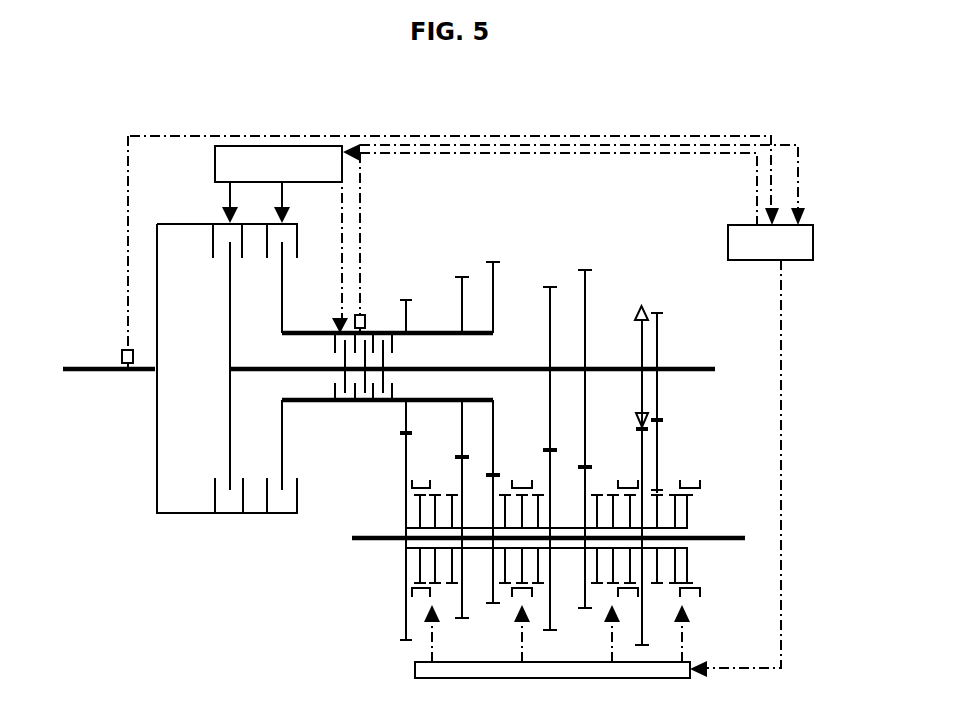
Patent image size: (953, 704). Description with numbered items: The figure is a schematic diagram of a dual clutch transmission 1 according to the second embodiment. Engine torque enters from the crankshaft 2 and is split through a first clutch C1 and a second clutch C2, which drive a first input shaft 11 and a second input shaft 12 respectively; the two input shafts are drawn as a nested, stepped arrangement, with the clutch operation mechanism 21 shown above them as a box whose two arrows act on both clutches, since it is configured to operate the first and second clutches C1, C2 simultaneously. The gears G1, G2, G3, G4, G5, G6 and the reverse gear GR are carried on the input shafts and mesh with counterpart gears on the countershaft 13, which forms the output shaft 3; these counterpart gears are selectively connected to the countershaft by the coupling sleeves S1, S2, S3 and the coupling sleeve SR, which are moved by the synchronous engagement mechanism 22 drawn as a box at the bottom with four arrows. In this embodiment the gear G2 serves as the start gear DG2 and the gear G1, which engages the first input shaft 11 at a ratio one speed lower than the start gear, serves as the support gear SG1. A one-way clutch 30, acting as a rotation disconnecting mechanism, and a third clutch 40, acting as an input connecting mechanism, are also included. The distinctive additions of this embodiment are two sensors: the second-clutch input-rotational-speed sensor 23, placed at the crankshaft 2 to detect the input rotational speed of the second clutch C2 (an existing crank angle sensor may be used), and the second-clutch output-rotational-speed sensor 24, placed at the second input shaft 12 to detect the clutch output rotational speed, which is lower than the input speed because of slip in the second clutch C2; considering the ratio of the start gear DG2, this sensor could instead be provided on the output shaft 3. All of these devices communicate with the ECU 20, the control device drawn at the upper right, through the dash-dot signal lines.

The dual clutch transmission 1 is at (806, 286).
The crankshaft 2 is at (65, 372).
The output shaft 3 is at (745, 538).
The first input shaft 11 is at (682, 363).
The second input shaft 12 is at (192, 349).
The countershaft 13 is at (352, 540).
The ECU 20 is at (810, 236).
The clutch operation mechanism 21 is at (233, 162).
The synchronous engagement mechanism 22 is at (420, 665).
The second-clutch input-rotational-speed sensor 23 is at (123, 351).
The second-clutch output-rotational-speed sensor 24 is at (355, 322).
The one-way clutch 30 is at (648, 387).
The third clutch 40 is at (342, 392).
The first clutch C1 is at (226, 295).
The second clutch C2 is at (182, 259).
The start gear DG2 is at (405, 417).
The gear G2 is at (405, 296).
The gear G3 is at (549, 283).
The gear G4 is at (461, 272).
The gear G5 is at (586, 267).
The gear G6 is at (493, 258).
The support gear SG1 is at (687, 401).
The gear G1 is at (640, 300).
The gear GR is at (657, 308).
The coupling sleeve S1 is at (617, 568).
The coupling sleeve S2 is at (437, 570).
The coupling sleeve S3 is at (527, 572).
The coupling sleeve SR is at (688, 574).